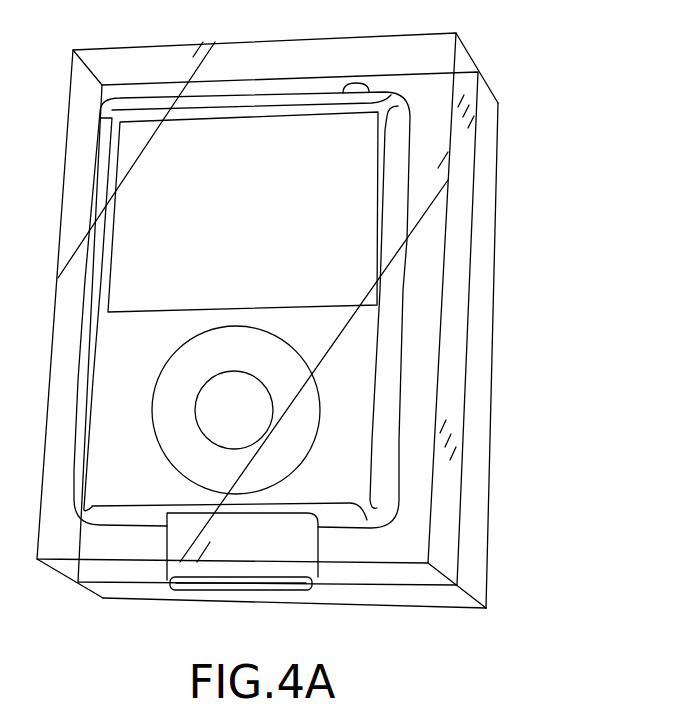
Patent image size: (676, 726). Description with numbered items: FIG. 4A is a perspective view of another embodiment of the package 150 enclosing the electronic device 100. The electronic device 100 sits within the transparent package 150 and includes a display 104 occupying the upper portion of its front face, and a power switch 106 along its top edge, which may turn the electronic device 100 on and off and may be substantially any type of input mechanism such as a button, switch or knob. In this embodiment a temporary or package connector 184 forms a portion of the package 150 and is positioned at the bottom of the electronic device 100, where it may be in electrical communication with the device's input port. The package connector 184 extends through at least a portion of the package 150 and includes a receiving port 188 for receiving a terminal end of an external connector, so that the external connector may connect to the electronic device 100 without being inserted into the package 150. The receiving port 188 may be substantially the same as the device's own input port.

The electronic device 100 is at (400, 223).
The display 104 is at (370, 139).
The power switch 106 is at (358, 82).
The package 150 is at (480, 375).
The package connector 184 is at (172, 590).
The receiving port 188 is at (313, 585).